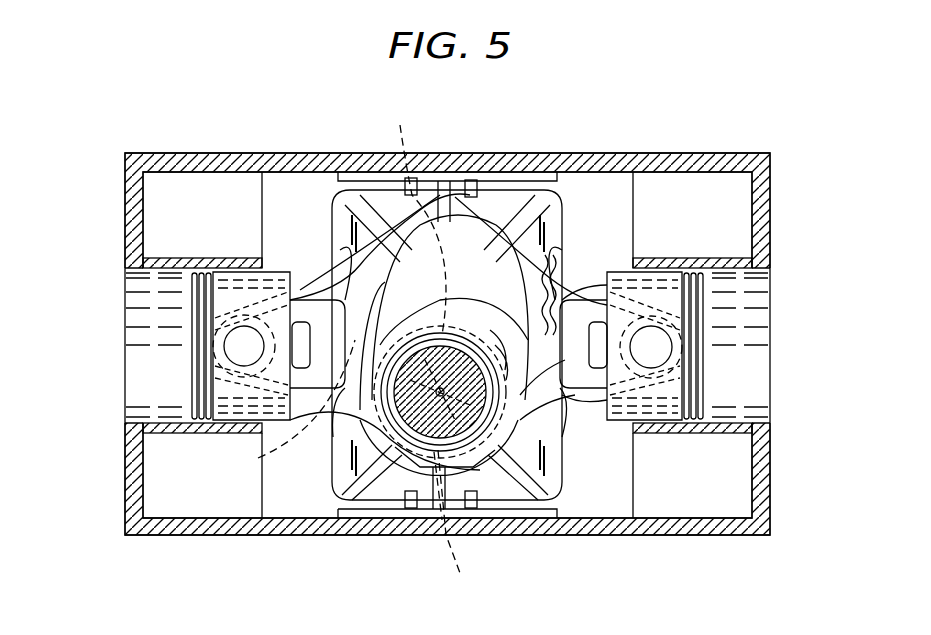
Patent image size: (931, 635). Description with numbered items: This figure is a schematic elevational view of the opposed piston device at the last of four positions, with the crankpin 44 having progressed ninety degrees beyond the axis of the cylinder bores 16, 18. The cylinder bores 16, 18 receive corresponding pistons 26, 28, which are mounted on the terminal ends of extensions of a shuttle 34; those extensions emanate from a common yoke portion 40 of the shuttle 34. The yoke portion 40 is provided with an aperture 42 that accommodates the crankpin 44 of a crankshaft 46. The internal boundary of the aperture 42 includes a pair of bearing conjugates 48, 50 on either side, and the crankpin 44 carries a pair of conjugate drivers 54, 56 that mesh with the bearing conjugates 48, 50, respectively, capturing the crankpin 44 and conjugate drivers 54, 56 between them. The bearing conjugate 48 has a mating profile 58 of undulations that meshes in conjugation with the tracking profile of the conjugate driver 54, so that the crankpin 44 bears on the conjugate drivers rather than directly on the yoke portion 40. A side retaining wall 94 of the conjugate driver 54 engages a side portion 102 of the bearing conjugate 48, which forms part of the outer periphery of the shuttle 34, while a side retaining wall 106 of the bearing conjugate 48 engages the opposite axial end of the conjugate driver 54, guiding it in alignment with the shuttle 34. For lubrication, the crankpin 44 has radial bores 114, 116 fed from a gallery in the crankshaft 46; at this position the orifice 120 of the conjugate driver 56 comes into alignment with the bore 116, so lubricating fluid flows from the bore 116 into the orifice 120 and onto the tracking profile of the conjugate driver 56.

The cylinder bore 16 is at (760, 342).
The cylinder bore 18 is at (146, 347).
The piston 26 is at (655, 285).
The piston 28 is at (275, 272).
The shuttle 34 is at (368, 503).
The yoke portion 40 is at (462, 181).
The aperture 42 is at (522, 255).
The crankpin 44 is at (540, 430).
The crankshaft 46 is at (417, 216).
The bearing conjugate 48 is at (577, 358).
The bearing conjugate 50 is at (291, 409).
The conjugate driver 54 is at (495, 425).
The conjugate driver 56 is at (350, 258).
The mating profile 58 is at (477, 252).
The side retaining wall 94 is at (550, 400).
The side portion 102 is at (595, 273).
The side retaining wall 106 is at (547, 253).
The bore 114 is at (475, 534).
The bore 116 is at (438, 486).
The orifice 120 is at (345, 423).